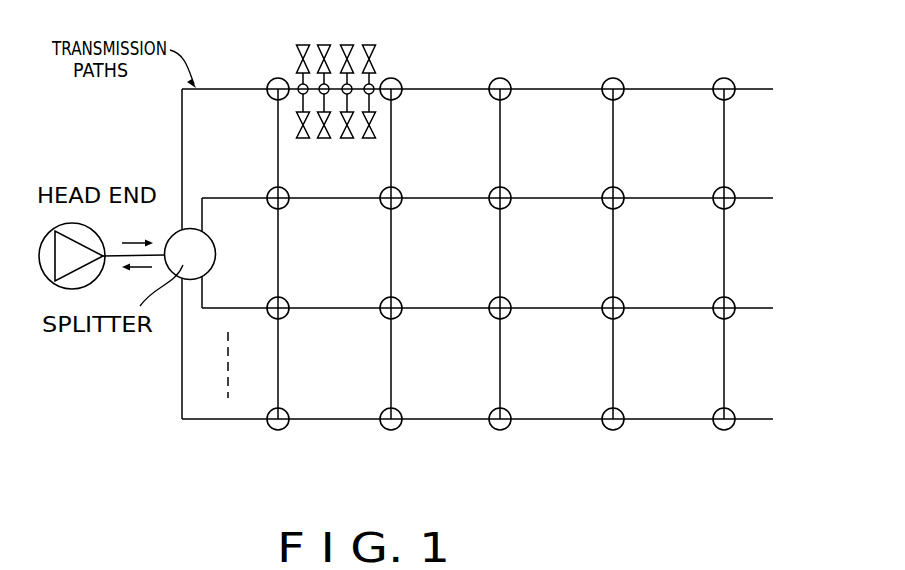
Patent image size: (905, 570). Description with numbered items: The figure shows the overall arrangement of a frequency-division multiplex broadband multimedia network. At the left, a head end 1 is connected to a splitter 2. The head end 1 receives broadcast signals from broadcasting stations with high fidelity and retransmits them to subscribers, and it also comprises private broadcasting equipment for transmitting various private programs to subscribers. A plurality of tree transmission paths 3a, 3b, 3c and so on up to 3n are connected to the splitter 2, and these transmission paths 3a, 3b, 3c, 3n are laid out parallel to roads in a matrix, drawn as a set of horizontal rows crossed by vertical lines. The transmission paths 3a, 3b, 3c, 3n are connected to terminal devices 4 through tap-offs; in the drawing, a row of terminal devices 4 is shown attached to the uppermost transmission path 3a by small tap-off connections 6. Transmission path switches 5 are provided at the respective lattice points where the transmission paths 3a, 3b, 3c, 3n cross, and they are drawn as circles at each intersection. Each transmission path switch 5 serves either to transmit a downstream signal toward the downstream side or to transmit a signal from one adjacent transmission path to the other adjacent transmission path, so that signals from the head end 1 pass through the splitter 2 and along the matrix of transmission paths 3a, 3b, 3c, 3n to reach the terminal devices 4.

The head end 1 is at (93, 281).
The splitter 2 is at (176, 232).
The transmission path 3a is at (222, 90).
The transmission path 3b is at (235, 199).
The transmission path 3c is at (222, 308).
The transmission path 3n is at (235, 420).
The terminal devices 4 is at (375, 48).
The transmission path switch 5 is at (398, 84).
The tap / branch connection 6 is at (298, 85).